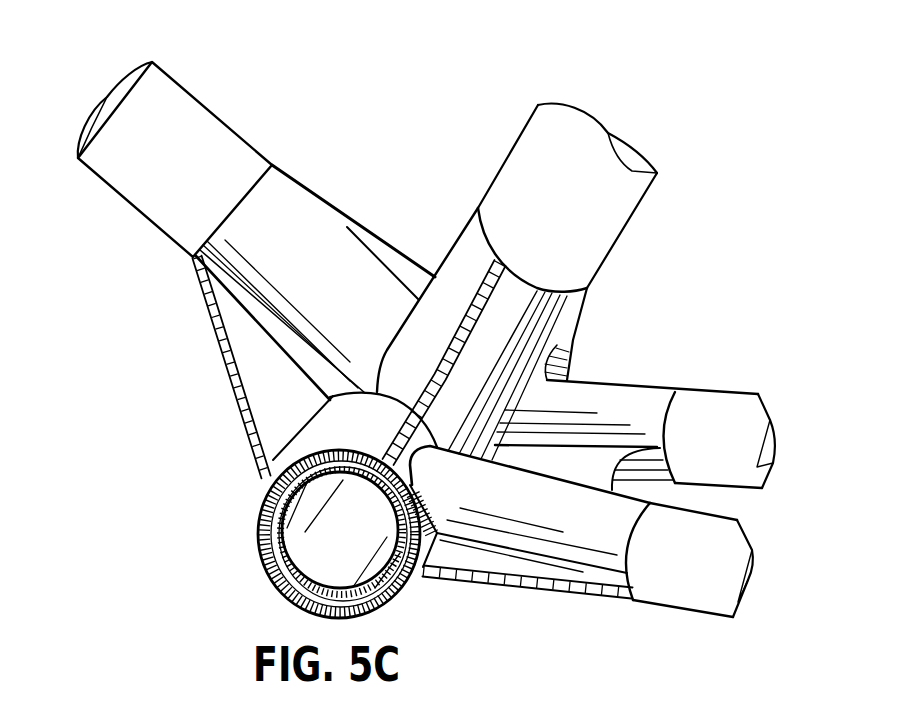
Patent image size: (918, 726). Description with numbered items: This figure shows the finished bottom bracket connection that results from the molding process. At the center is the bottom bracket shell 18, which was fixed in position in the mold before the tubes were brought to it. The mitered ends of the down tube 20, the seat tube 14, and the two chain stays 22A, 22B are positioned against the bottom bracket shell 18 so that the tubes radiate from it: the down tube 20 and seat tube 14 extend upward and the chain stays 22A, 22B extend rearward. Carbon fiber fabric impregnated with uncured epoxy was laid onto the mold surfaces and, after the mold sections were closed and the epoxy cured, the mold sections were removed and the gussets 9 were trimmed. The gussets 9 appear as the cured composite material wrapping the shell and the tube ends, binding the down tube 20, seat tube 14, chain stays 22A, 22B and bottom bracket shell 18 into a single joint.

The gussets 9 is at (247, 330).
The seat tube 14 is at (555, 182).
The bottom bracket shell 18 is at (267, 540).
The down tube 20 is at (183, 152).
The chain stay 22A is at (697, 567).
The chain stay 22B is at (725, 433).